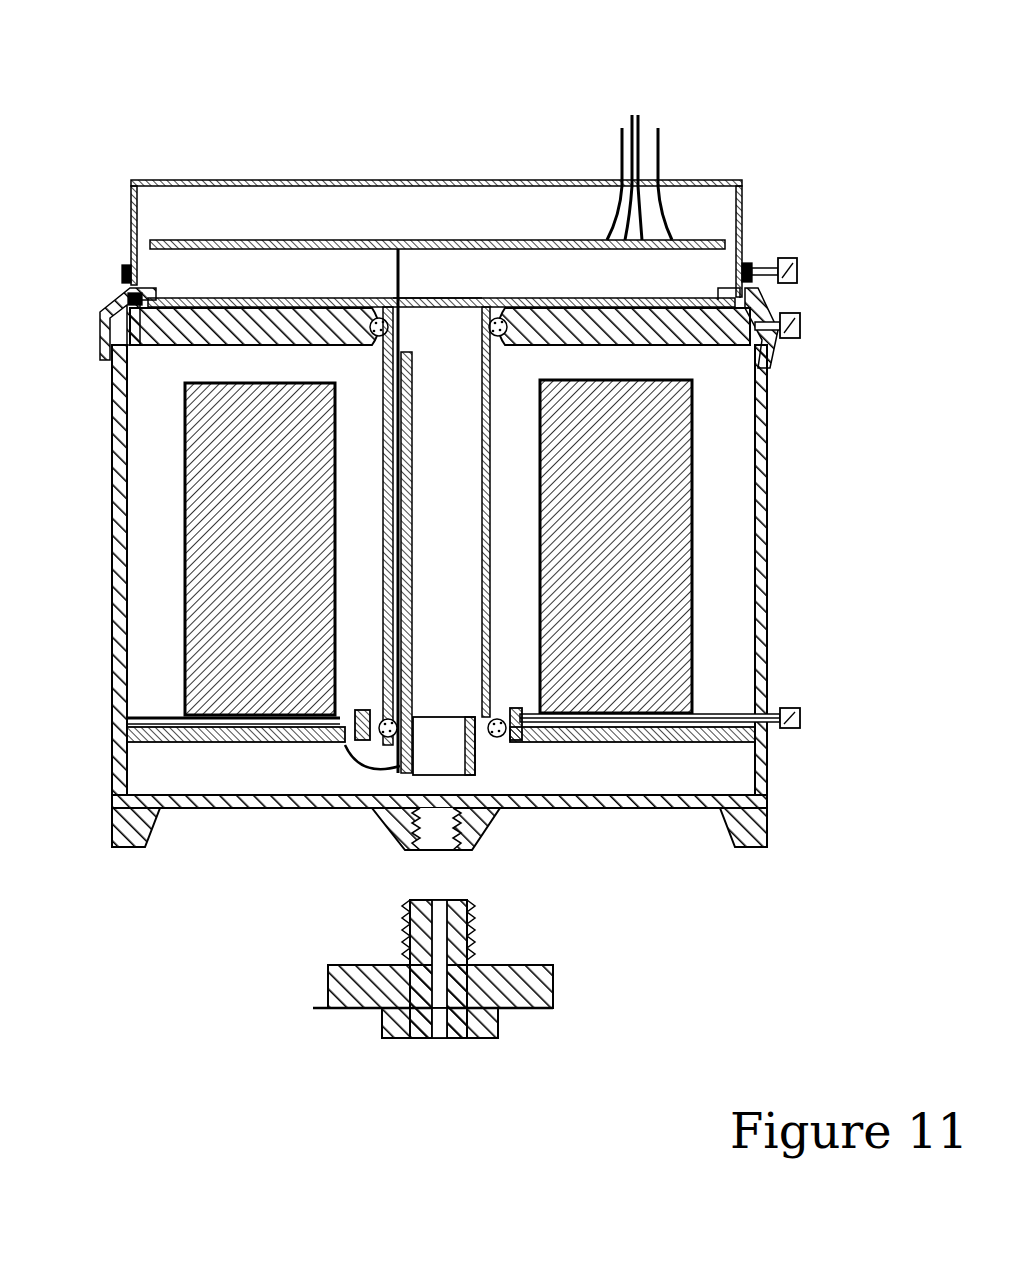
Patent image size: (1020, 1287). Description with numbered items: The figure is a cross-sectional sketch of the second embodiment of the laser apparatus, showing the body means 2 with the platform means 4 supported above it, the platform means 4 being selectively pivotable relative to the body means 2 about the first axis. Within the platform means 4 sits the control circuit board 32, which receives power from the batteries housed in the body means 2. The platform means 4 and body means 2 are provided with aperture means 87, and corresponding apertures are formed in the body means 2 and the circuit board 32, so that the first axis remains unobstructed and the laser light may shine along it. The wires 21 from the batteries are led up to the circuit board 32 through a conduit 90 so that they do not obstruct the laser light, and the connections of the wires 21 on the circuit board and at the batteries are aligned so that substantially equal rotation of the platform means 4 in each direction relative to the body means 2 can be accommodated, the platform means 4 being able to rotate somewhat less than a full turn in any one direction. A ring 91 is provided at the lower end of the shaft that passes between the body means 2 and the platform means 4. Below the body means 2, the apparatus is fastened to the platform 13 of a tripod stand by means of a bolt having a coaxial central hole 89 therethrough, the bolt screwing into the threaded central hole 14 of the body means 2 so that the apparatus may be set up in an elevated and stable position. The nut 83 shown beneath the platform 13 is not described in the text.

The body means 2 is at (767, 473).
The platform means 4 is at (230, 180).
The aperture means 87 is at (430, 178).
The control circuit board 32 is at (200, 237).
The ring 91 is at (400, 787).
The conduit 90 is at (603, 743).
The wires 21 is at (345, 745).
The threaded hole 14 is at (483, 830).
The platform 13 is at (330, 998).
The nut 83 is at (390, 1027).
The coaxial central hole 89 is at (440, 1030).